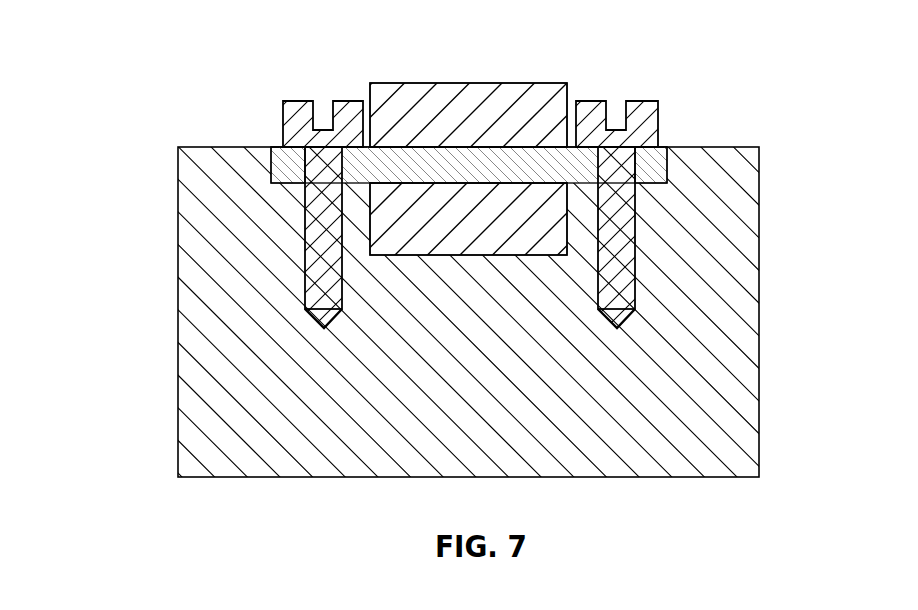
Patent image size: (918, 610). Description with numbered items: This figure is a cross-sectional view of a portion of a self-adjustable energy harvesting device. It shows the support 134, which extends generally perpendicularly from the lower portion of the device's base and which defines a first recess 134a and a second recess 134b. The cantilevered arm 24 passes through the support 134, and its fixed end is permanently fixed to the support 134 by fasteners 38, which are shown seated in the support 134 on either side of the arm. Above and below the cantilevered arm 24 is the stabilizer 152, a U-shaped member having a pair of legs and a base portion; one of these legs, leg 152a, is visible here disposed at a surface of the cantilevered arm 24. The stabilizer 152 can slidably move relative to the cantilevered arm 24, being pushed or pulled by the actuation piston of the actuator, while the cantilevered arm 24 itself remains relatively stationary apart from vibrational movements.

The support 134 is at (232, 157).
The first recess 134a is at (281, 185).
The second recess 134b is at (398, 256).
The cantilevered arm 24 is at (433, 147).
The fasteners 38 is at (300, 100).
The stabilizer 152 is at (508, 80).
The leg 152a is at (478, 90).